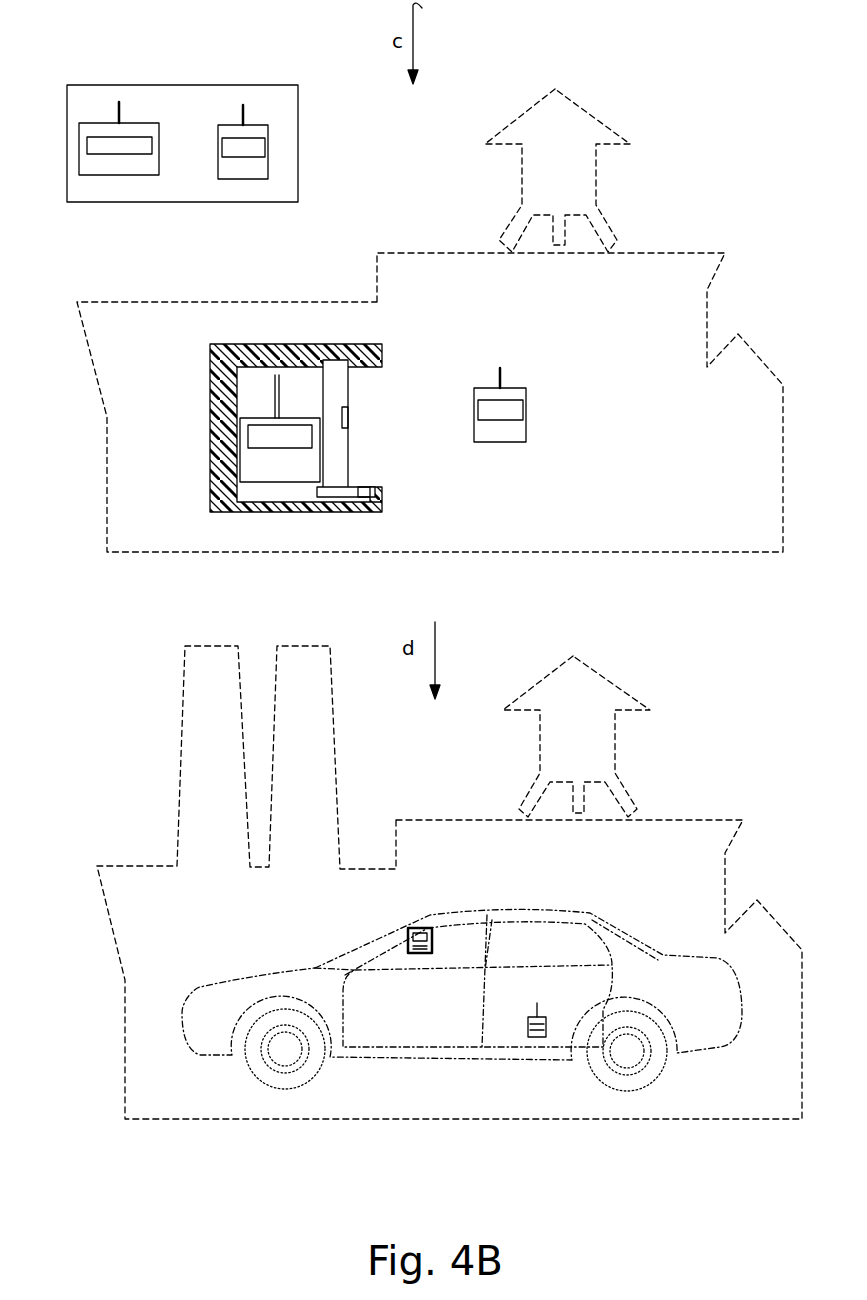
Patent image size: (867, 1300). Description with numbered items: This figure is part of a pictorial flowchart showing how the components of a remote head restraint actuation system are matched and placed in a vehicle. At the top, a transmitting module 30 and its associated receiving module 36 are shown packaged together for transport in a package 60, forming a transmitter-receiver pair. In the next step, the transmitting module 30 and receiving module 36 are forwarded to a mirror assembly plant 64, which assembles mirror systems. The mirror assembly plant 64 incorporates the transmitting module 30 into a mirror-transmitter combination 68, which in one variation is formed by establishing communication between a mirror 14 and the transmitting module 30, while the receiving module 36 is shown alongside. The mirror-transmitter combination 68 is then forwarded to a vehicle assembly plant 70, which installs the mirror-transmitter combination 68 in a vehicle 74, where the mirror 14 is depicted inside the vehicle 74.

The mirror 14 is at (430, 932).
The transmitting module 30 is at (106, 118).
The receiving module 36 is at (268, 163).
The package 60 is at (207, 85).
The mirror assembly plant 64 is at (655, 253).
The mirror-transmitter combination 68 is at (233, 345).
The vehicle assembly plant 70 is at (677, 819).
The vehicle 74 is at (593, 913).